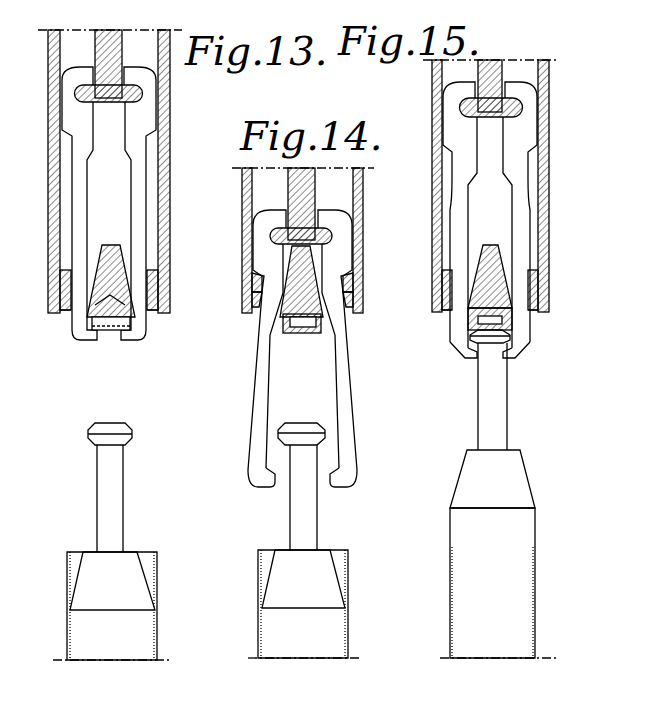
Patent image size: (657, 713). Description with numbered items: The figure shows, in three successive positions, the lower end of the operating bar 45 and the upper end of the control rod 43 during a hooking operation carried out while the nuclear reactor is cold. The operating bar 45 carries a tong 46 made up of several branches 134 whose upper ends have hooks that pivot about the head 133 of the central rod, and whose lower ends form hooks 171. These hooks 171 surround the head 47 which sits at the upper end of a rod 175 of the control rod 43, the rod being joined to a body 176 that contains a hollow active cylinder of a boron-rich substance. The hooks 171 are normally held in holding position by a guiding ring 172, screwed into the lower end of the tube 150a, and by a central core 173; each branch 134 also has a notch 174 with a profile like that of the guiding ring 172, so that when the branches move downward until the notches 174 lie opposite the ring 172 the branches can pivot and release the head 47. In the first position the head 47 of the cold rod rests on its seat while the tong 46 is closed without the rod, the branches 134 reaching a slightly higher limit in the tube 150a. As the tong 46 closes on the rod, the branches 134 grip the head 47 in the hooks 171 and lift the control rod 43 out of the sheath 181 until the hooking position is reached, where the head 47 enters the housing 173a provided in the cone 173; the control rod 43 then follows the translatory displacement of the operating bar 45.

In FIG. 13, the control rod 43 is at (112, 581).
In FIG. 14, the control rod 43 is at (303, 579).
In FIG. 15, the control rod 43 is at (492, 479).
In FIG. 15, the operating bar 45 is at (552, 172).
In FIG. 13, the tong 46 is at (72, 115).
In FIG. 13, the head 47 is at (132, 436).
In FIG. 14, the head 47 is at (299, 432).
In FIG. 15, the head 47 is at (482, 337).
In FIG. 13, the head of rod 133 is at (140, 93).
In FIG. 14, the head of rod 133 is at (332, 233).
In FIG. 15, the head of rod 133 is at (462, 108).
In FIG. 13, the branches 134 is at (142, 248).
In FIG. 14, the branches 134 is at (345, 380).
In FIG. 15, the branches 134 is at (525, 327).
In FIG. 13, the tube 150a is at (167, 138).
In FIG. 14, the tube 150a is at (247, 200).
In FIG. 15, the tube 150a is at (432, 156).
In FIG. 14, the hooks 171 is at (347, 476).
In FIG. 15, the hooks 171 is at (518, 351).
In FIG. 14, the guiding ring 172 is at (348, 298).
In FIG. 14, the central core 173 is at (305, 272).
In FIG. 15, the central core 173 is at (495, 283).
In FIG. 14, the housing 173a is at (305, 333).
In FIG. 14, the notch 174 is at (350, 279).
In FIG. 13, the rod 175 is at (117, 472).
In FIG. 13, the body 176 is at (112, 606).
In FIG. 14, the body 176 is at (305, 604).
In FIG. 15, the body 176 is at (498, 583).
In FIG. 13, the sheath 181 is at (157, 578).
In FIG. 14, the sheath 181 is at (348, 576).
In FIG. 15, the sheath 181 is at (538, 597).